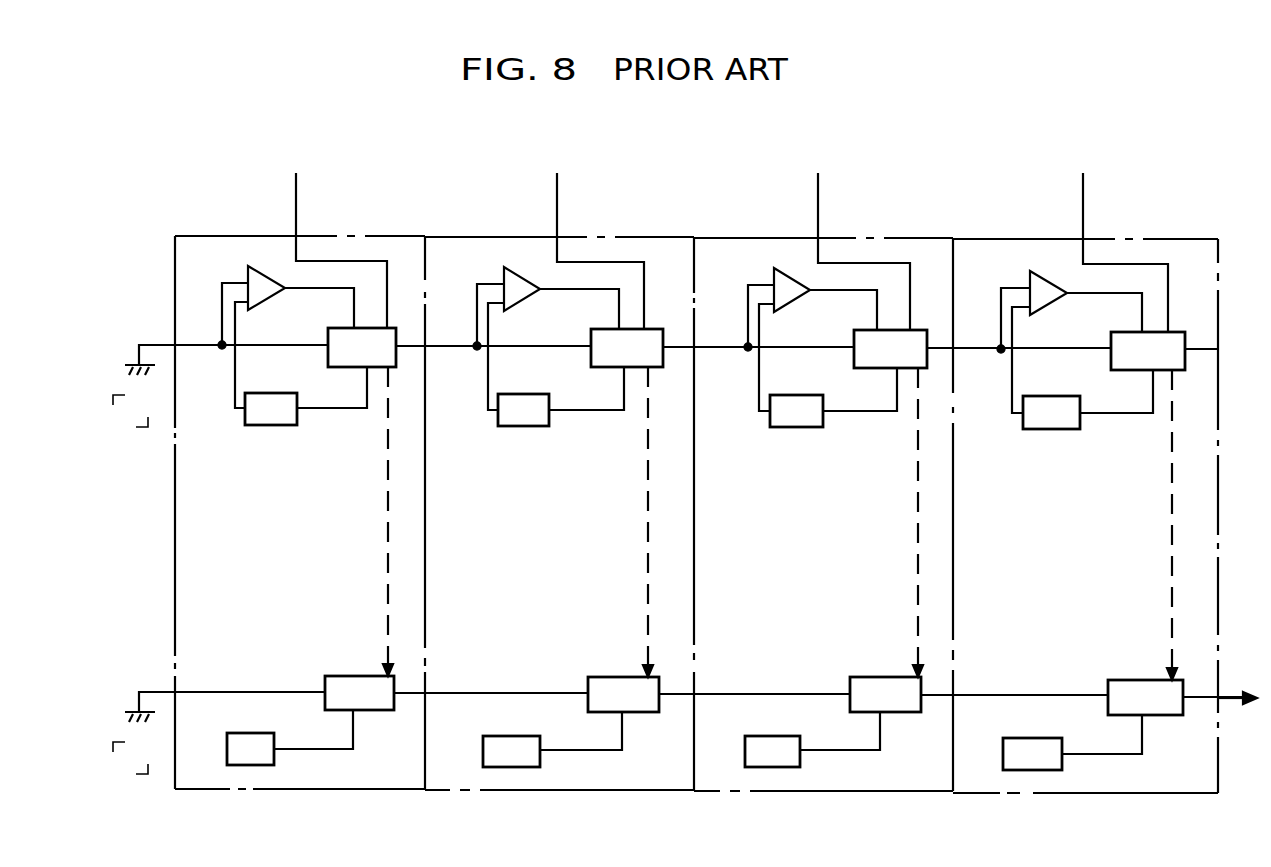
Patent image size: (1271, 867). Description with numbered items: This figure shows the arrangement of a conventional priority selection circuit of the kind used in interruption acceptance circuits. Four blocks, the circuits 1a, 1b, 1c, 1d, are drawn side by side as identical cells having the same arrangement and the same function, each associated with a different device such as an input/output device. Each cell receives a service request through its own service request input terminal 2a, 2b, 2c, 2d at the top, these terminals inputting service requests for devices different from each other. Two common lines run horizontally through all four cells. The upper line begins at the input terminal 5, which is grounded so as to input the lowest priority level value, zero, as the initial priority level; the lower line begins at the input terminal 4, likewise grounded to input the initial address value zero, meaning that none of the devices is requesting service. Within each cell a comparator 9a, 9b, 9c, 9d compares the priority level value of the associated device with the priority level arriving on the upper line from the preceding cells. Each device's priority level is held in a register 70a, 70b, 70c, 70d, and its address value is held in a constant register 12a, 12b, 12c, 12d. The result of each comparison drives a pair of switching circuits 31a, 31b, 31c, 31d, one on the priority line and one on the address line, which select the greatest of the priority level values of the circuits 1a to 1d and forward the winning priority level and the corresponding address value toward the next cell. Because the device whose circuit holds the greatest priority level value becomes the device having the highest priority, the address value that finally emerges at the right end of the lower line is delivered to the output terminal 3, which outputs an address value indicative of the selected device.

The circuit block 1a is at (327, 789).
The circuit block 1b is at (572, 793).
The circuit block 1c is at (787, 793).
The circuit block 1d is at (1087, 797).
The service request input terminal 2a is at (297, 202).
The service request input terminal 2b is at (558, 203).
The service request input terminal 2c is at (819, 204).
The service request input terminal 2d is at (1084, 205).
The output terminal 3 is at (1225, 705).
The input terminal for initial address value 4 is at (125, 703).
The input terminal for initial priority level 5 is at (135, 352).
The comparator 9a is at (267, 302).
The comparator 9b is at (522, 303).
The comparator 9c is at (792, 304).
The comparator 9d is at (1048, 307).
The constant register 12a is at (252, 737).
The constant register 12b is at (511, 736).
The constant register 12c is at (776, 736).
The constant register 12d is at (1039, 737).
The switching circuit 31a is at (351, 367).
The switching circuit 31b is at (614, 368).
The switching circuit 31c is at (875, 370).
The switching circuit 31d is at (1136, 371).
The priority level register 70a is at (268, 425).
The priority level register 70b is at (523, 426).
The priority level register 70c is at (796, 427).
The priority level register 70d is at (1048, 429).